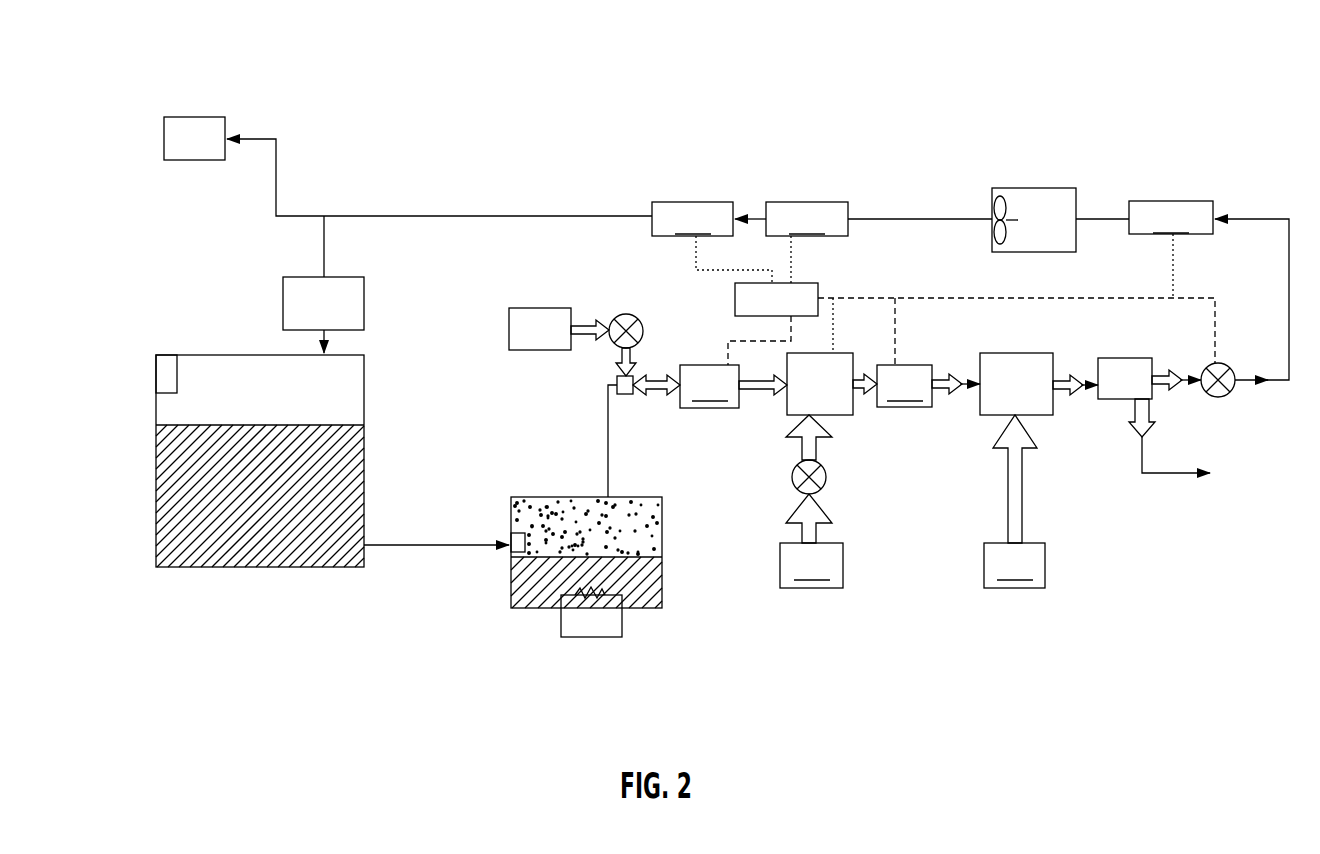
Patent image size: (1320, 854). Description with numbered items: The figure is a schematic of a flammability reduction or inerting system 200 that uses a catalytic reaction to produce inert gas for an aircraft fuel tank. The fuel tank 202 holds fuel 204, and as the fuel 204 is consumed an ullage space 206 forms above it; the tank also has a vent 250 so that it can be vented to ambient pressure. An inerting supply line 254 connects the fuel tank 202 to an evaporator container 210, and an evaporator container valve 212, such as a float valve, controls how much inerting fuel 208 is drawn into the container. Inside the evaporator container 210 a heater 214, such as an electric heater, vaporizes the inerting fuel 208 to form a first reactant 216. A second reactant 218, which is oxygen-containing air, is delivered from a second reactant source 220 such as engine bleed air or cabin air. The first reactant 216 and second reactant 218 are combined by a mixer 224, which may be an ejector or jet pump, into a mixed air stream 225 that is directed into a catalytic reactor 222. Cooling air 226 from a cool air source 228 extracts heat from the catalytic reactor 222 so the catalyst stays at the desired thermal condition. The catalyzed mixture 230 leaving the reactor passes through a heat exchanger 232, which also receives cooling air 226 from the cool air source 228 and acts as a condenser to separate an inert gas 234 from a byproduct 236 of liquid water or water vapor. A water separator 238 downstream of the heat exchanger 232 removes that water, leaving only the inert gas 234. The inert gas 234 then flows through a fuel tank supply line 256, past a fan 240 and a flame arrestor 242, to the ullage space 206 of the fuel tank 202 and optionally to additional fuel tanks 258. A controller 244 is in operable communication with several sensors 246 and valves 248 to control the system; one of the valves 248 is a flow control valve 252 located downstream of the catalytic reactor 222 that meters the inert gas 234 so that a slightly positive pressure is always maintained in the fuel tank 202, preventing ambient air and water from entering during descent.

The inerting system 200 is at (351, 126).
The fuel tank 202 is at (240, 355).
The fuel 204 is at (250, 545).
The ullage space 206 is at (335, 402).
The inerting fuel 208 is at (649, 585).
The evaporator container 210 is at (533, 497).
The evaporator container valve 212 is at (507, 548).
The heater 214 is at (621, 620).
The first reactant 216 is at (649, 525).
The second reactant 218 is at (591, 323).
The second reactant source 220 is at (558, 344).
The catalytic reactor 222 is at (838, 399).
The mixer 224 is at (628, 394).
The mixed air stream 225 is at (748, 392).
The cooling air 226 is at (817, 447).
The cool air source 228 is at (912, 565).
The catalyzed mixture 230 is at (858, 372).
The heat exchanger 232 is at (1034, 399).
The inert gas 234 is at (1167, 372).
The byproduct 236 is at (1133, 415).
The water separator 238 is at (1143, 394).
The fan 240 is at (1058, 235).
The flame arrestor 242 is at (341, 319).
The controller 244 is at (795, 315).
The sensors 246 is at (932, 304).
The valves 248 is at (625, 313).
The vent 250 is at (167, 365).
The flow control valve 252 is at (1215, 408).
The inerting supply line 254 is at (412, 545).
The fuel tank supply line 256 is at (448, 216).
The additional fuel tanks 258 is at (212, 154).